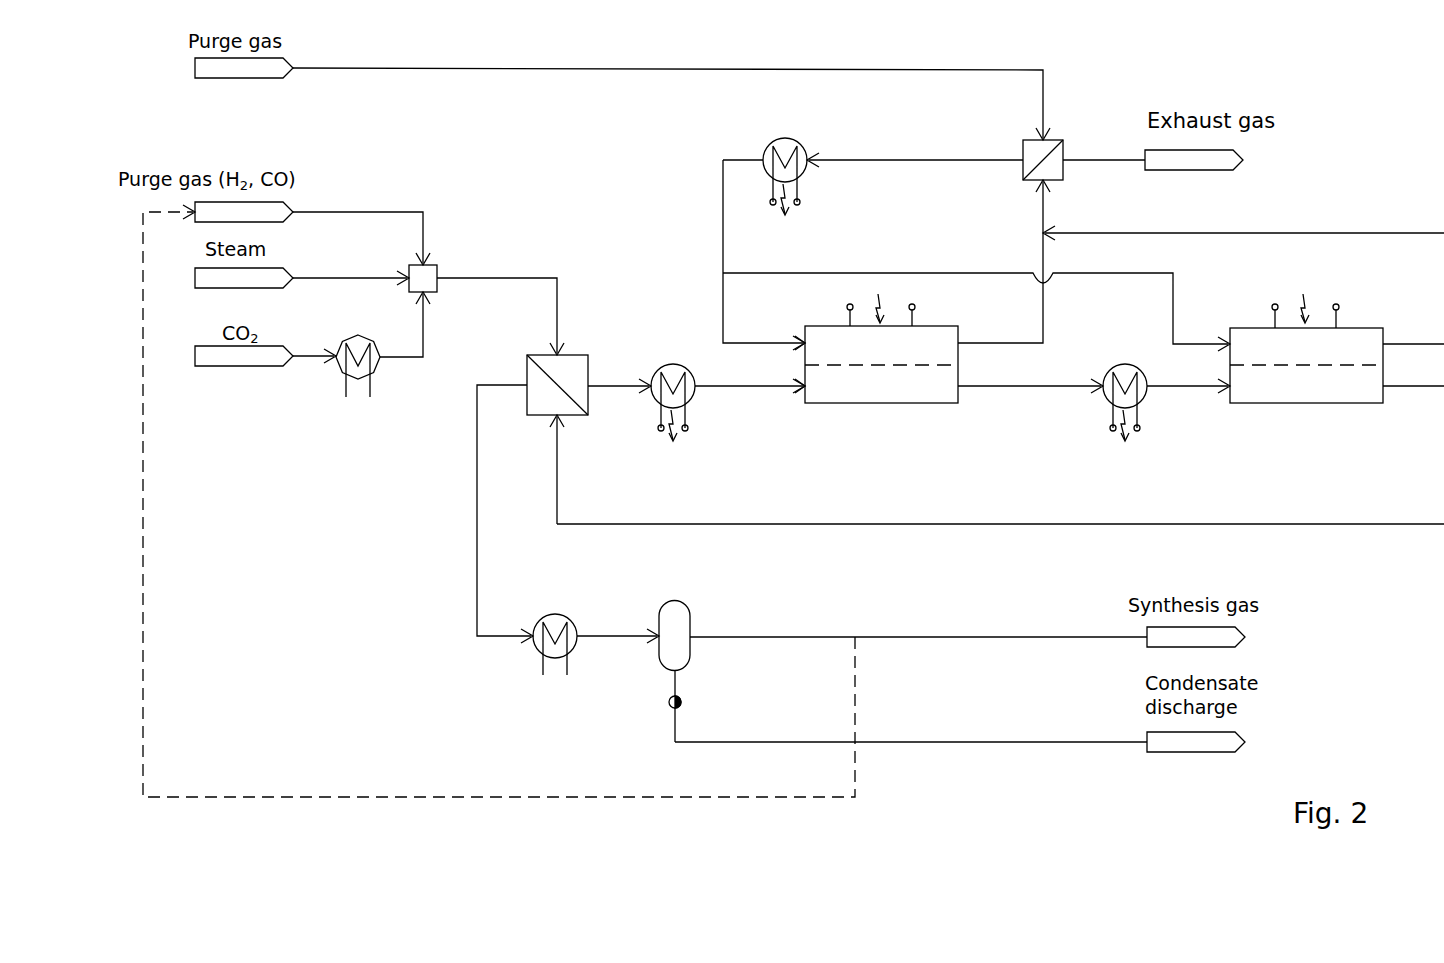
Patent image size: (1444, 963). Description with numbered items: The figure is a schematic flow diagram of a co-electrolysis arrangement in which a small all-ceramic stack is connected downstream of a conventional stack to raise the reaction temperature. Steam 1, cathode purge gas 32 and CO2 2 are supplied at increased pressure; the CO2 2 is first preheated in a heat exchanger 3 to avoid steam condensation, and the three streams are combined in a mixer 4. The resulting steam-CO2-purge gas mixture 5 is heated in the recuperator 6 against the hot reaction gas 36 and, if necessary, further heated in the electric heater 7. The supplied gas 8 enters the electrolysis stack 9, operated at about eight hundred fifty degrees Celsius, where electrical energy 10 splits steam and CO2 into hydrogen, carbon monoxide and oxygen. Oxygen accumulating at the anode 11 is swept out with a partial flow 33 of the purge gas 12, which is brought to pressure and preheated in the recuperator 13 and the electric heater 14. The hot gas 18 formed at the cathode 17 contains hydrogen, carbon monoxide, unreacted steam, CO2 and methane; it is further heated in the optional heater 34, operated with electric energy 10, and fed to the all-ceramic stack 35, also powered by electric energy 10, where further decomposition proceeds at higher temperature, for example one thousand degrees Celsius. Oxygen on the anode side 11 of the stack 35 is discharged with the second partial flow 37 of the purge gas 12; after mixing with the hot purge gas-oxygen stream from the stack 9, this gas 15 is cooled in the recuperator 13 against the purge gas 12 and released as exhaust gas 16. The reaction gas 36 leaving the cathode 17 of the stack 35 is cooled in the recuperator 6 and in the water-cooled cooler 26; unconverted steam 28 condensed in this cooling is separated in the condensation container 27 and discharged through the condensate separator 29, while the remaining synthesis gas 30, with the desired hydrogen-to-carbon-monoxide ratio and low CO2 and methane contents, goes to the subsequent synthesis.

The steam 1 is at (351, 269).
The CO2 2 is at (314, 347).
The heat exchanger 3 is at (383, 344).
The mixer 4 is at (430, 288).
The steam-CO2-purge gas mixture 5 is at (500, 305).
The recuperator 6 is at (960, 490).
The electric heater 7 is at (641, 387).
The supplied gas 8 is at (750, 397).
The electrolysis stack 9 is at (876, 365).
The electrical energy 10 is at (1014, 326).
The anode 11 is at (1158, 344).
The purge gas 12 is at (671, 91).
The recuperator 13 is at (1034, 150).
The electric heater 14 is at (873, 162).
The gas 15 is at (1201, 261).
The exhaust gas 16 is at (1104, 147).
The cathode 17 is at (1158, 387).
The hot gas 18 is at (1030, 396).
The cooler 26 is at (596, 631).
The condensation container 27 is at (688, 637).
The steam 28 is at (911, 731).
The condensate separator 29 is at (689, 706).
The synthesis gas 30 is at (918, 625).
The cathode purge gas 32 is at (361, 226).
The partial flow 33 is at (975, 255).
The heater 34 is at (1166, 389).
The all-ceramic stack 35 is at (1306, 365).
The reaction gas 36 is at (1413, 379).
The second partial flow 37 is at (1210, 337).